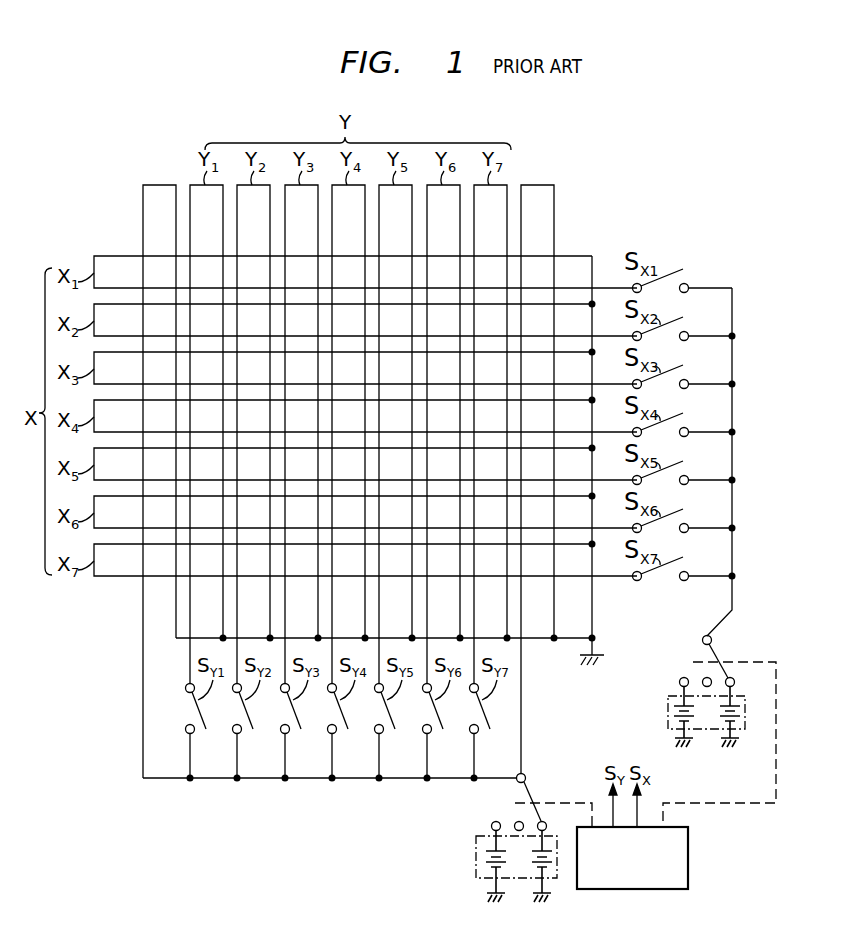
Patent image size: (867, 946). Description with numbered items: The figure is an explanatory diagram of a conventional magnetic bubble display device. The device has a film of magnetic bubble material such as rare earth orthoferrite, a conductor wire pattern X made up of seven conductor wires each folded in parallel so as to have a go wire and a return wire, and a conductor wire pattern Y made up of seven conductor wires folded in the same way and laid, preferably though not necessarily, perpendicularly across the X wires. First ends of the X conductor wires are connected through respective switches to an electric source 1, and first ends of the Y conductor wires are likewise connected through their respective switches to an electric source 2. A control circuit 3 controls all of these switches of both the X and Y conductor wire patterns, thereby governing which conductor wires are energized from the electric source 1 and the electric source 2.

The electric source 1 is at (746, 708).
The electric source 2 is at (476, 849).
The control circuit 3 is at (688, 858).